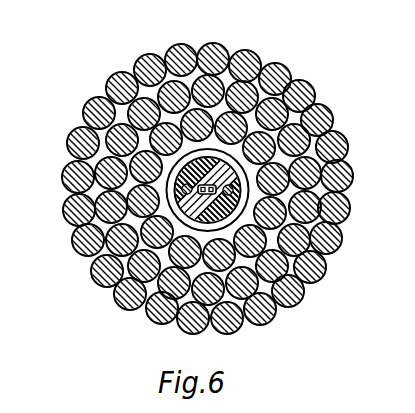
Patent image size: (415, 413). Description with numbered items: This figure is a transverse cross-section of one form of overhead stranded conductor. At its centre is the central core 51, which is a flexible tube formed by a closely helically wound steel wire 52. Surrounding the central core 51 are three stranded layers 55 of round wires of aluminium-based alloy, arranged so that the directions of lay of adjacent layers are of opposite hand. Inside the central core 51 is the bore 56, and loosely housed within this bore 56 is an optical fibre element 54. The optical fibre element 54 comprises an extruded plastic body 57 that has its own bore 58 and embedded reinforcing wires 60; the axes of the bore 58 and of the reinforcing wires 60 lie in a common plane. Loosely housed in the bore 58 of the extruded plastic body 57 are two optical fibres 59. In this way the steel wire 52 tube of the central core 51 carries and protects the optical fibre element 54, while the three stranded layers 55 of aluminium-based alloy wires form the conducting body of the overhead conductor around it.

The central core 51 is at (345, 204).
The steel wire 52 is at (330, 257).
The optical fibre element 54 is at (73, 235).
The stranded layers 55 is at (318, 93).
The bore 56 is at (99, 283).
The extruded plastic body 57 is at (160, 164).
The bore 58 is at (106, 87).
The optical fibres 59 is at (209, 184).
The reinforcing wires 60 is at (261, 58).